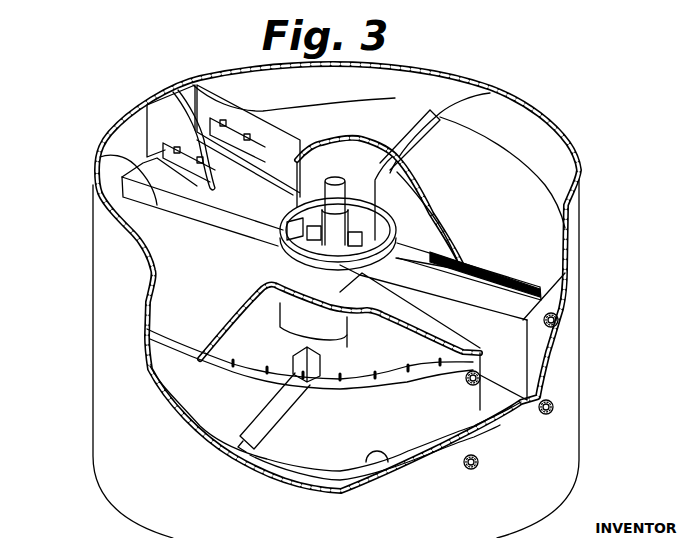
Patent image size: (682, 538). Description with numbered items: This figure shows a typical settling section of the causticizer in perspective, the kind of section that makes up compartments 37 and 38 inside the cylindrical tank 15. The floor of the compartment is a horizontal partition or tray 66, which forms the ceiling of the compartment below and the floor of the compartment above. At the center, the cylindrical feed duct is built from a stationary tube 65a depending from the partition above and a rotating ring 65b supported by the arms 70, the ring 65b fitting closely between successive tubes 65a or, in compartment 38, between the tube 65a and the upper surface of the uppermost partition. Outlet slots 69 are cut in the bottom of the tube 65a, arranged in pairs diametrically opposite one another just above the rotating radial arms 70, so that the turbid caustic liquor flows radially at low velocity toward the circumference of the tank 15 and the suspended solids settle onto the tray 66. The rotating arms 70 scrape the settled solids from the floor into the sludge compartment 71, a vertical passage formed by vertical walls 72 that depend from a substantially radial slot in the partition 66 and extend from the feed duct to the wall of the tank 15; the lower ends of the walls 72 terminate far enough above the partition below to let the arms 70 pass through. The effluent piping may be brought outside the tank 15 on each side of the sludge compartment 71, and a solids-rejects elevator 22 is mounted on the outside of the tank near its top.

The cylindrical tank 15 is at (580, 240).
The solids-rejects elevator 22 is at (390, 160).
The settling compartment 37 is at (332, 200).
The settling compartment 38 is at (335, 423).
The stationary tubes 65a is at (384, 208).
The rotating rings 65b is at (287, 257).
The horizontal partitions or trays 66 is at (371, 318).
The outlet slots 69 is at (393, 160).
The rotating radial arms 70 is at (123, 175).
The sludge compartments 71 is at (250, 190).
The vertical walls 72 is at (177, 92).